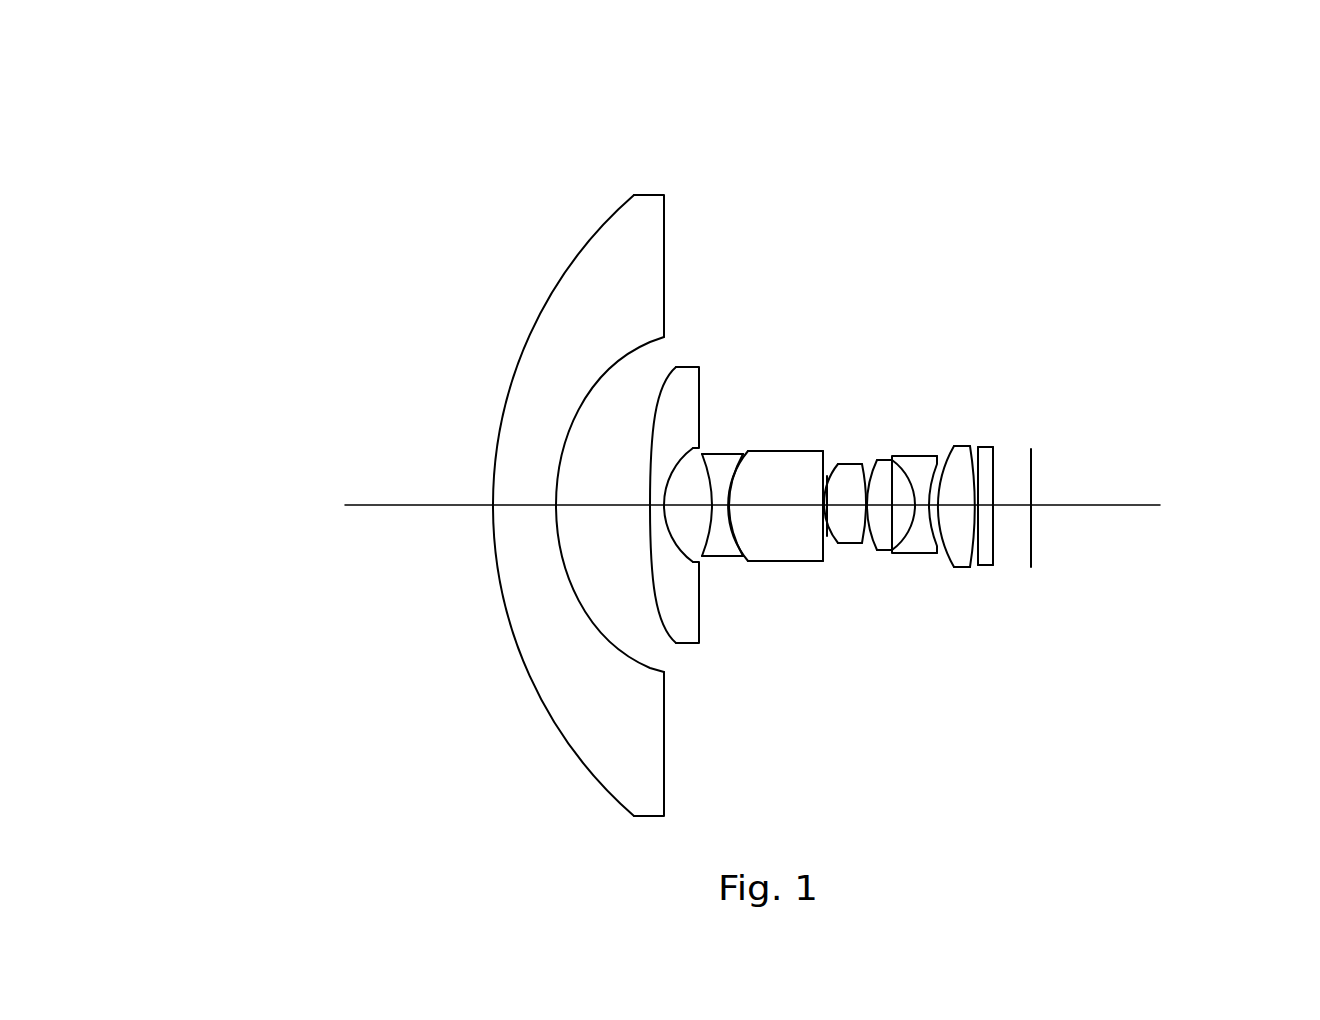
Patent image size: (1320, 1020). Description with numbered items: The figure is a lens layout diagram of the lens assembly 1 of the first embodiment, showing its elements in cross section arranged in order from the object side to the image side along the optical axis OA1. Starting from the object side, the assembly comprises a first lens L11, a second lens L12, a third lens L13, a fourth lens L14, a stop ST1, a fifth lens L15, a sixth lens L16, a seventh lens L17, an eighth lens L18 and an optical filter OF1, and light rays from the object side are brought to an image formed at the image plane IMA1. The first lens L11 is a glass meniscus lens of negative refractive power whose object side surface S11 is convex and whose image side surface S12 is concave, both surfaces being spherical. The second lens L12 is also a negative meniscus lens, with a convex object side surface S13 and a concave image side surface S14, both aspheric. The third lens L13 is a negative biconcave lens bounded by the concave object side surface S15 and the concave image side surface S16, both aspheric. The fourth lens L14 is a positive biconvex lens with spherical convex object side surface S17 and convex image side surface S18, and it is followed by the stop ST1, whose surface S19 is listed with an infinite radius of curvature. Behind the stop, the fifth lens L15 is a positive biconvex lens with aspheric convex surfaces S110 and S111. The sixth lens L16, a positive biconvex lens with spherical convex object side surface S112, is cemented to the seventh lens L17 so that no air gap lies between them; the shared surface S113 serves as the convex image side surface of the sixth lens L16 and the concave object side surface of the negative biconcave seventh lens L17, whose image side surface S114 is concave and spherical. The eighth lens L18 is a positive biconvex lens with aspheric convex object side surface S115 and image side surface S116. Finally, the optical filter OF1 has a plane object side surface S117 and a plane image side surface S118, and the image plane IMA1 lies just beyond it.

The lens assembly 1 is at (160, 113).
The optical axis OA1 is at (435, 505).
The first lens L11 is at (541, 487).
The second lens L12 is at (701, 530).
The third lens L13 is at (762, 567).
The fourth lens L14 is at (800, 560).
The stop ST1 is at (856, 516).
The fifth lens L15 is at (935, 579).
The sixth lens L16 is at (992, 549).
The seventh lens L17 is at (1020, 492).
The eighth lens L18 is at (1060, 461).
The optical filter OF1 is at (1081, 442).
The image plane IMA1 is at (1031, 449).
The object side surface of first lens S11 is at (542, 702).
The image side surface of first lens S12 is at (628, 653).
The object side surface of second lens S13 is at (661, 628).
The image side surface of second lens S14 is at (690, 560).
The object side surface of third lens S15 is at (702, 557).
The image side surface of third lens S16 is at (741, 557).
The object side surface of fourth lens S17 is at (748, 560).
The image side surface of fourth lens S18 is at (822, 557).
The stop surface S19 is at (845, 543).
The object side surface of fifth lens S110 is at (853, 543).
The image side surface of fifth lens S111 is at (867, 542).
The object side surface of sixth lens S112 is at (878, 551).
The cemented surface of sixth and seventh lenses S113 is at (901, 551).
The image side surface of seventh lens S114 is at (936, 553).
The object side surface of eighth lens S115 is at (955, 567).
The image side surface of eighth lens S116 is at (972, 567).
The object side surface of optical filter S117 is at (979, 562).
The image side surface of optical filter S118 is at (993, 556).